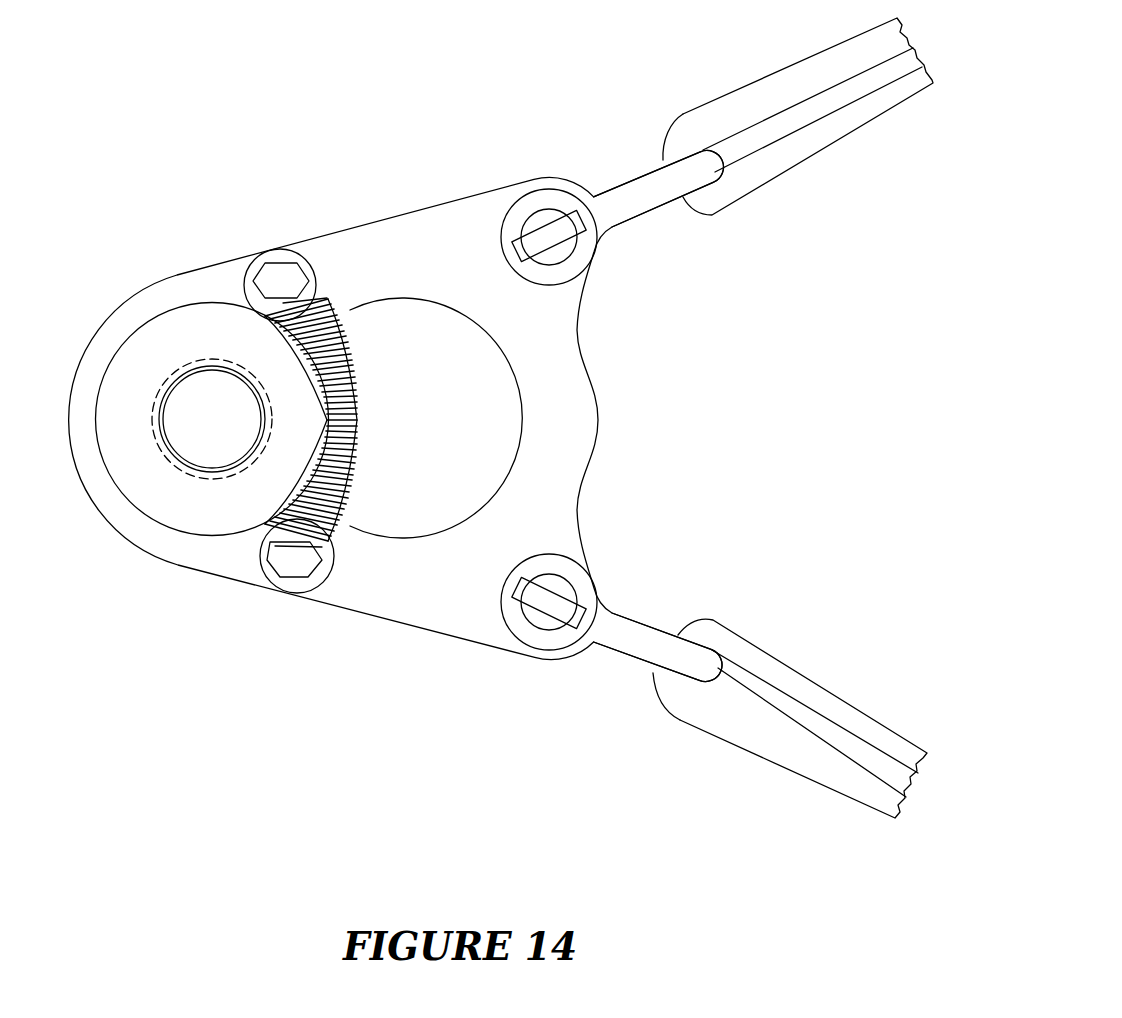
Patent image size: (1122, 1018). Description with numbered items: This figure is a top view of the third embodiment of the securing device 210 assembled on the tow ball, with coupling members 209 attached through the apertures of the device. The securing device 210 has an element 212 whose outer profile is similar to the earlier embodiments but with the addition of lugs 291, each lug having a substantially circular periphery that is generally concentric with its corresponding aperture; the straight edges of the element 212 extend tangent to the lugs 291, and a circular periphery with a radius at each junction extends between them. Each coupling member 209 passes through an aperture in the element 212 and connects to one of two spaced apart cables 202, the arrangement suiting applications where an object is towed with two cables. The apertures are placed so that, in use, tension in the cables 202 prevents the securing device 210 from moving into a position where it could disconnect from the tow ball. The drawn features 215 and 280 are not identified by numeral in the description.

The securing device 210 is at (83, 226).
The element 212 is at (350, 257).
The opening 215 is at (482, 403).
The spring 280 is at (273, 291).
The lugs 291 is at (524, 186).
The cables 202 is at (696, 110).
The coupling member 209 is at (657, 208).